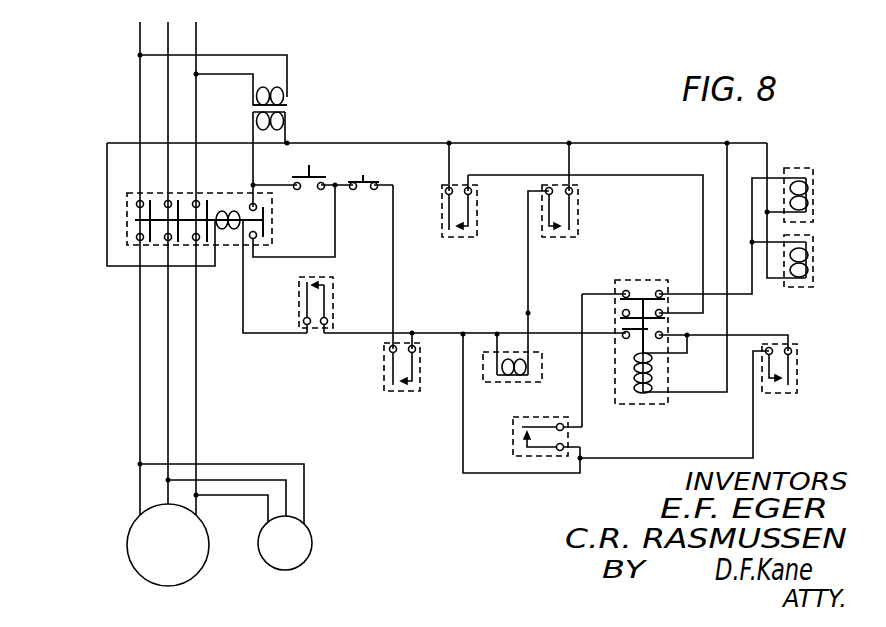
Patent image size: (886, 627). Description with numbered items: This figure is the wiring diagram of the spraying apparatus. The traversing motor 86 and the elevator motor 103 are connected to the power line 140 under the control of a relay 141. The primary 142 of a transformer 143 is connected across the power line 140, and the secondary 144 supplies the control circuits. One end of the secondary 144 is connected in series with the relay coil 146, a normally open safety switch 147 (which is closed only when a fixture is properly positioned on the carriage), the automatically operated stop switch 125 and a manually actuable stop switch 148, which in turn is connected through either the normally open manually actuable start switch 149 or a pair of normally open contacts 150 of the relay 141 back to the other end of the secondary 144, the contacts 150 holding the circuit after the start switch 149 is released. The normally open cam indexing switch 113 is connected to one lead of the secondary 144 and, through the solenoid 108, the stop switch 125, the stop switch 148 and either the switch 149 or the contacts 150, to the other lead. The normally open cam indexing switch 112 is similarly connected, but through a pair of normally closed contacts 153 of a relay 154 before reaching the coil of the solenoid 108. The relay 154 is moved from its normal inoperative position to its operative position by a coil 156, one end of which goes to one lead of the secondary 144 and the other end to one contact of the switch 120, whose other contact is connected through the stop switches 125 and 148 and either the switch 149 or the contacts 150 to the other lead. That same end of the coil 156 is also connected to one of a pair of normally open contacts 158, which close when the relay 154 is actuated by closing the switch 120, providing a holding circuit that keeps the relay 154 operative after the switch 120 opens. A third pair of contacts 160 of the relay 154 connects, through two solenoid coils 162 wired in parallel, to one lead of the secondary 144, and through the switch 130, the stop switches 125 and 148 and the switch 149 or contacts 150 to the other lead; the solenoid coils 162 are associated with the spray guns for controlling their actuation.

The traversing motor 86 is at (312, 543).
The elevator motor 103 is at (138, 537).
The solenoid 108 is at (528, 381).
The cam indexing switch 112 is at (460, 238).
The cam indexing switch 113 is at (560, 238).
The switch 120 is at (797, 383).
The automatically operated stop switch 125 is at (403, 392).
The switch 130 is at (513, 437).
The power line 140 is at (140, 41).
The relay 141 is at (127, 192).
The primary 142 is at (285, 95).
The transformer 143 is at (290, 103).
The secondary 144 is at (285, 122).
The relay coil 146 is at (226, 210).
The safety switch 147 is at (332, 303).
The manually actuable stop switch 148 is at (385, 160).
The manually actuable start switch 149 is at (309, 172).
The contacts 150 is at (282, 246).
The normally closed contacts 153 is at (623, 310).
The relay 154 is at (632, 278).
The coil 156 is at (653, 368).
The normally open contacts 158 is at (624, 338).
The contacts 160 is at (661, 289).
The solenoid coils 162 is at (812, 302).